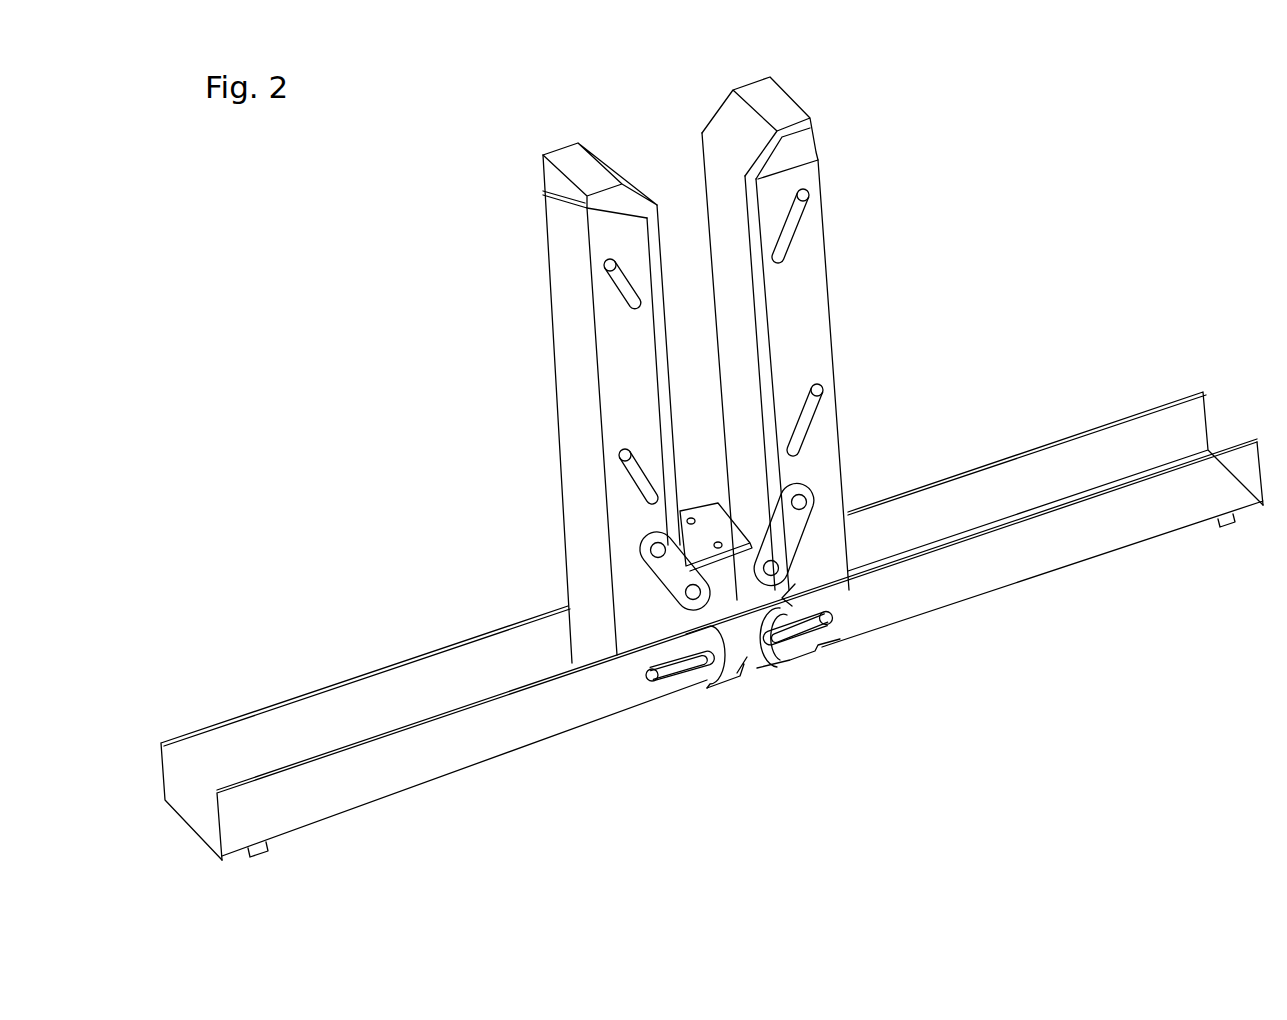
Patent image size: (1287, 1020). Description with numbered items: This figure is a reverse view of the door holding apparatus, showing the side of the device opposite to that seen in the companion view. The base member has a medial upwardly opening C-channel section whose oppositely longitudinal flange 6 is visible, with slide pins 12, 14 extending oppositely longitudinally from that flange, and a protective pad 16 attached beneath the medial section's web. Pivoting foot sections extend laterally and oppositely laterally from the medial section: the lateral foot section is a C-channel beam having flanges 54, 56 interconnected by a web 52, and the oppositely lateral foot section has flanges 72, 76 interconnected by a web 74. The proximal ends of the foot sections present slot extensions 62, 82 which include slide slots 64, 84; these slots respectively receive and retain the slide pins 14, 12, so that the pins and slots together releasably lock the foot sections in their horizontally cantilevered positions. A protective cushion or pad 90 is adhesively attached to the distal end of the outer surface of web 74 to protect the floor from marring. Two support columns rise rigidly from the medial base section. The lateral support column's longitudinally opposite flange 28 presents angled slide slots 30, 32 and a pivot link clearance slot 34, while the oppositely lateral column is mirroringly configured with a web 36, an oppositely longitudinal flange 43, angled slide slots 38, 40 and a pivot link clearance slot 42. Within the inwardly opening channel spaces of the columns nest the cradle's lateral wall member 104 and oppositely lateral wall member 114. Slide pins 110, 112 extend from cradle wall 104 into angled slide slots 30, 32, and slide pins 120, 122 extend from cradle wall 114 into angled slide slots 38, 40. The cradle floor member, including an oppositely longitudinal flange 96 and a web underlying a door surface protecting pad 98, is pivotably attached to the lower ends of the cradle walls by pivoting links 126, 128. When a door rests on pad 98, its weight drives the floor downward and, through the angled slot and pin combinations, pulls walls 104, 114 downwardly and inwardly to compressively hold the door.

The oppositely longitudinal flange 6 is at (815, 683).
The slide pin 12 is at (655, 693).
The slide pin 14 is at (834, 617).
The protective pad 16 is at (760, 668).
The flange 28 is at (815, 338).
The angled slide slot 30 is at (830, 220).
The angled slide slot 32 is at (844, 409).
The pivot link clearance slot 34 is at (846, 527).
The web 36 is at (571, 403).
The angled slide slot 38 is at (554, 299).
The angled slide slot 40 is at (576, 498).
The pivot link clearance slot 42 is at (567, 628).
The oppositely longitudinal flange 43 is at (633, 380).
The web 52 is at (1042, 519).
The flange 54 is at (1053, 437).
The flange 56 is at (1092, 540).
The slot extension 62 is at (877, 644).
The slide slot 64 is at (851, 651).
The flange 72 is at (709, 664).
The web 74 is at (200, 805).
The flange 76 is at (447, 750).
The slot extension 82 is at (712, 670).
The slide slot 84 is at (672, 715).
The protective pad 90 is at (247, 847).
The oppositely longitudinal flange 96 is at (820, 600).
The door surface protecting pad 98 is at (710, 505).
The lateral wall member 104 is at (790, 150).
The slide pin 110 is at (812, 202).
The slide pin 112 is at (822, 393).
The oppositely lateral wall member 114 is at (555, 188).
The slide pin 120 is at (603, 267).
The slide pin 122 is at (618, 458).
The pivoting link 126 is at (820, 513).
The pivoting link 128 is at (655, 583).